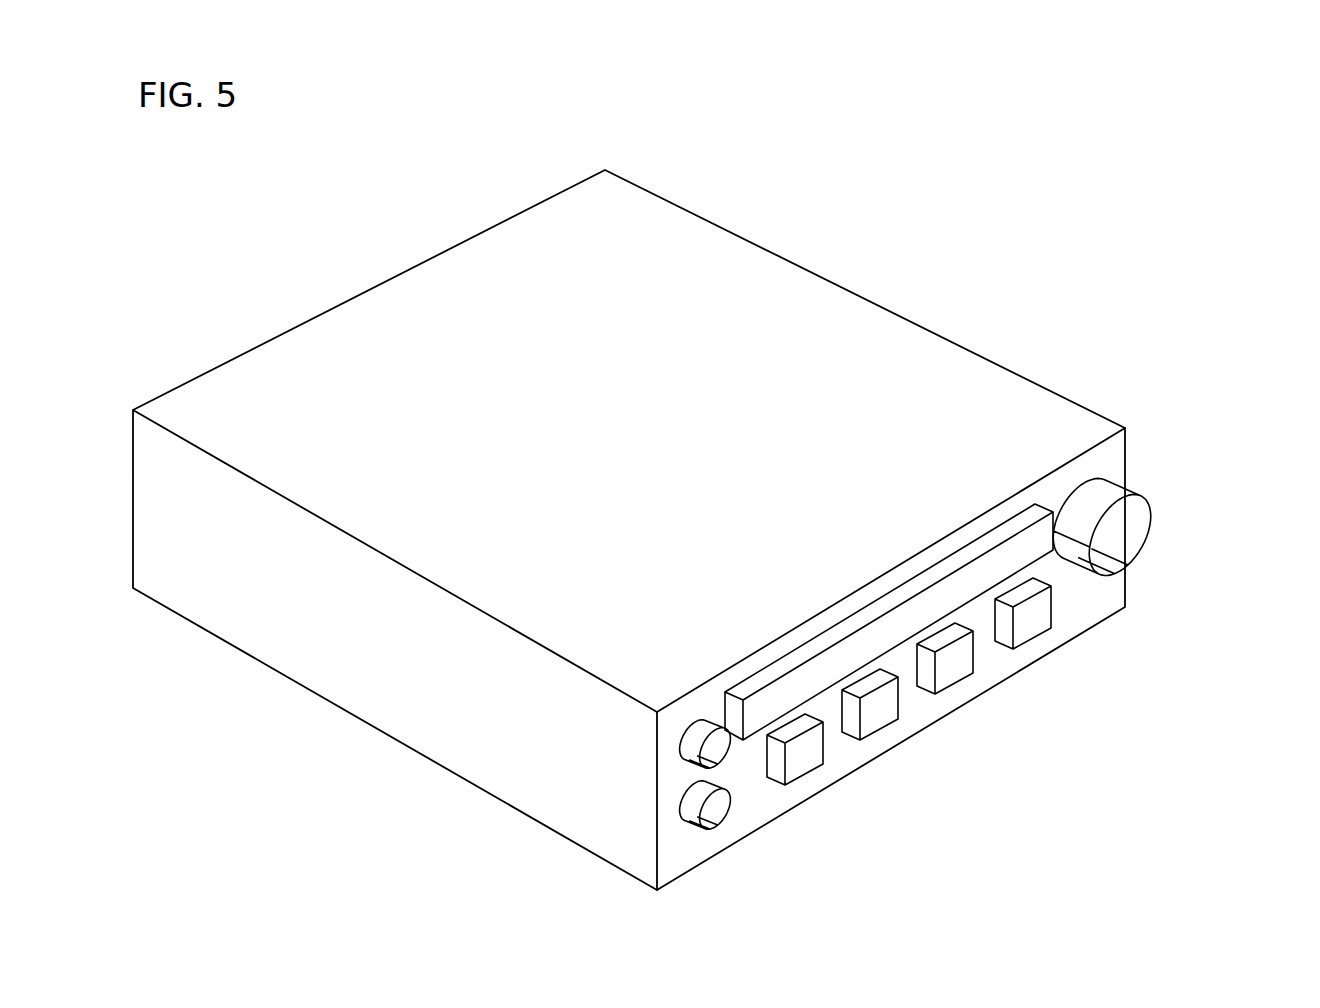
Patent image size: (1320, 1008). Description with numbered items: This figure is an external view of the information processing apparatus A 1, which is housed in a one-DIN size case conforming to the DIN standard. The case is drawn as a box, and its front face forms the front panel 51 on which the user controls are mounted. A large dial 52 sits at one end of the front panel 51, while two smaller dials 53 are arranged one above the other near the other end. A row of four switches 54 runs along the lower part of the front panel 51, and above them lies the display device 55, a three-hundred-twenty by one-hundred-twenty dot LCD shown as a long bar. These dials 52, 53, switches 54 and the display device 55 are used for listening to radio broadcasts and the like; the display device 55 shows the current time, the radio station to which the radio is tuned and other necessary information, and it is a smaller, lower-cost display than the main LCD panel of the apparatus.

The information processing apparatus A 1 is at (797, 310).
The front panel 51 is at (1115, 467).
The dial 52 is at (1120, 558).
The dial 53 is at (683, 817).
The switches 54 is at (807, 753).
The display device 55 is at (890, 640).